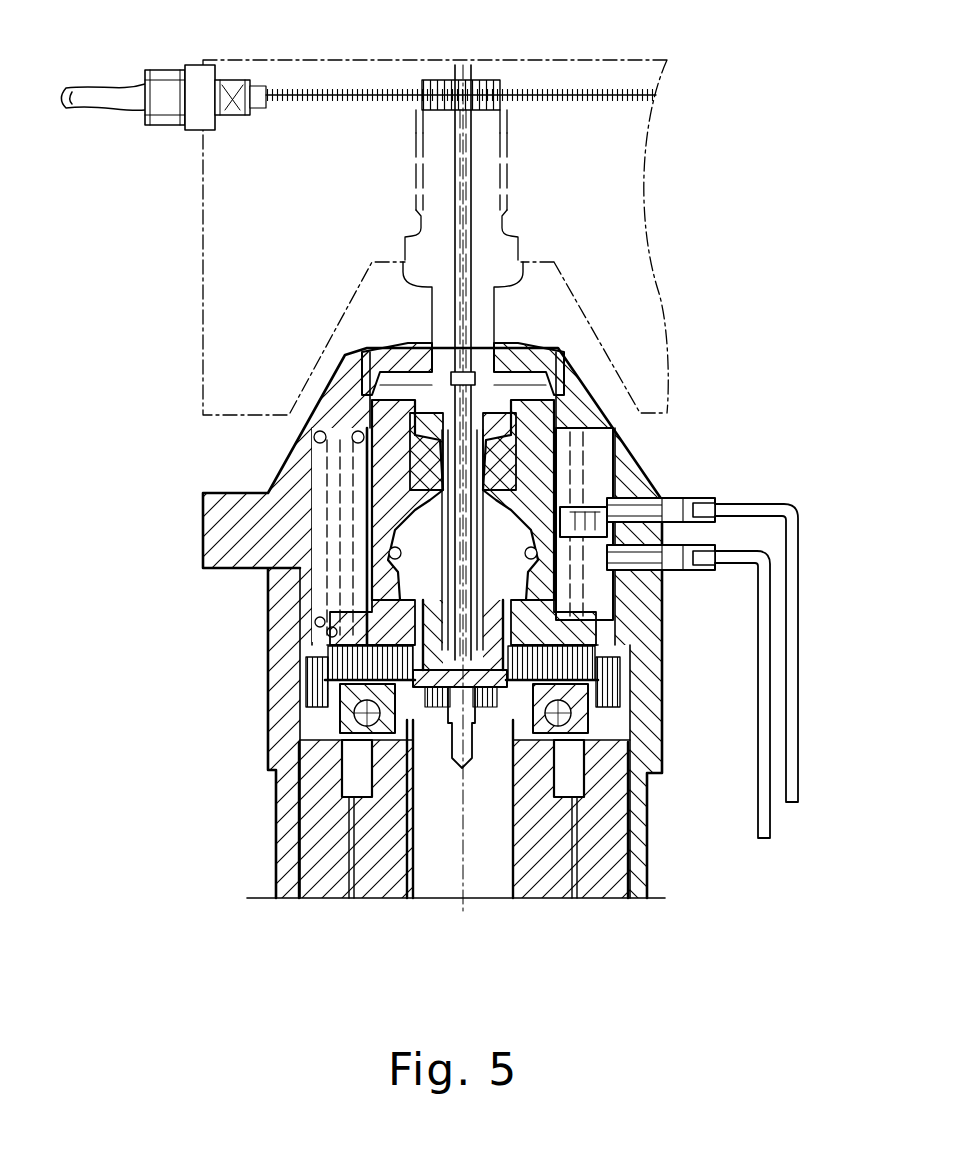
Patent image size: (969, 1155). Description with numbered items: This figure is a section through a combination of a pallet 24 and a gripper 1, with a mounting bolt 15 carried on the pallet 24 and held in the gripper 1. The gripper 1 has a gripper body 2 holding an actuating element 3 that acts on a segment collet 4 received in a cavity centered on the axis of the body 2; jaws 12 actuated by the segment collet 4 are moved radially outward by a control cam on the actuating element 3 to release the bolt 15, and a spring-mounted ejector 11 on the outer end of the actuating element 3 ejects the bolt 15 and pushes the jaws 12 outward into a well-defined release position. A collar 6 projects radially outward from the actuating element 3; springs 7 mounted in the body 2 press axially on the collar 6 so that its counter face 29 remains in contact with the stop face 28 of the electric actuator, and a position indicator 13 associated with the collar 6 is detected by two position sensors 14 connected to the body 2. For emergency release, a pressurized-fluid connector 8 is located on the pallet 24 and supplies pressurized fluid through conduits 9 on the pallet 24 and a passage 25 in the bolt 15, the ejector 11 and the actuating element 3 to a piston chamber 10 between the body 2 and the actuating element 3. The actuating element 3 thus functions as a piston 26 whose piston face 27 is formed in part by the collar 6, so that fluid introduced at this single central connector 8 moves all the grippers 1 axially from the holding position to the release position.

The gripper 1 is at (262, 912).
The gripper body 2 is at (630, 785).
The actuating element 3 is at (545, 480).
The segment collet 4 is at (540, 462).
The collar 6 is at (540, 667).
The springs 7 is at (340, 538).
The pressurized-fluid connector 8 is at (152, 72).
The conduit 9 is at (400, 97).
The piston chamber 10 is at (335, 695).
The ejector 11 is at (488, 462).
The jaws 12 is at (370, 392).
The position indicator 13 is at (580, 592).
The position sensors 14 is at (770, 532).
The mounting bolt 15 is at (470, 327).
The pallet 24 is at (300, 268).
The passage 25 is at (330, 618).
The piston 26 is at (555, 627).
The piston face 27 is at (300, 736).
The stop face 28 is at (487, 790).
The counter face 29 is at (602, 790).